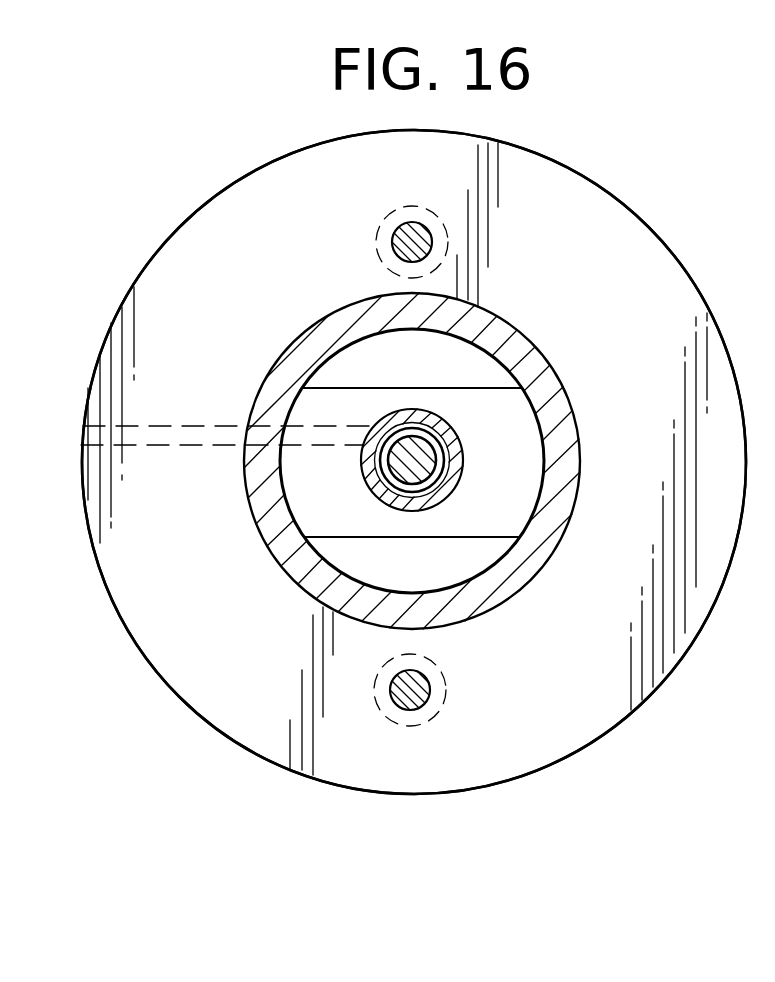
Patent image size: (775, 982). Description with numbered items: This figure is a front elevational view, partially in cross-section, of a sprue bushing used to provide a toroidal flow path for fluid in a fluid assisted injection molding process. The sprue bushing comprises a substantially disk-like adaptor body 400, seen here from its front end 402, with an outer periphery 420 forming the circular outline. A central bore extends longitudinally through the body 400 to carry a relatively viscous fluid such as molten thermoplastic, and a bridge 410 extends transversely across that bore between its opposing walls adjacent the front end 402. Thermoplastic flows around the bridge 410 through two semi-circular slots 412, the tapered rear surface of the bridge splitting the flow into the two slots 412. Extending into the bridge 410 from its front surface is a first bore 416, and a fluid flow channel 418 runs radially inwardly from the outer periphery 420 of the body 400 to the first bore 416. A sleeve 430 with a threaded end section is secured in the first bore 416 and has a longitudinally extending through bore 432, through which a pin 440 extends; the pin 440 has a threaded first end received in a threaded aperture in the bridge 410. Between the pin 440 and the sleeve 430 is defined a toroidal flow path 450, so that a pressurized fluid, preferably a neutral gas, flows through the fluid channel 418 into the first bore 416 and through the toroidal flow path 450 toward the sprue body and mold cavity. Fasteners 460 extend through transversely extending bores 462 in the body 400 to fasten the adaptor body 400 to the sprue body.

The adaptor body 400 is at (560, 162).
The front end 402 is at (463, 765).
The bridge 410 is at (517, 490).
The semi-circular slots 412 is at (456, 344).
The first bore 416 is at (460, 460).
The fluid flow channel 418 is at (178, 443).
The outer periphery 420 is at (142, 270).
The sleeve 430 is at (367, 485).
The through bore 432 is at (440, 482).
The pin 440 is at (463, 440).
The toroidal flow path 450 is at (407, 430).
The fasteners 460 is at (395, 228).
The transversely extending bores 462 is at (377, 245).